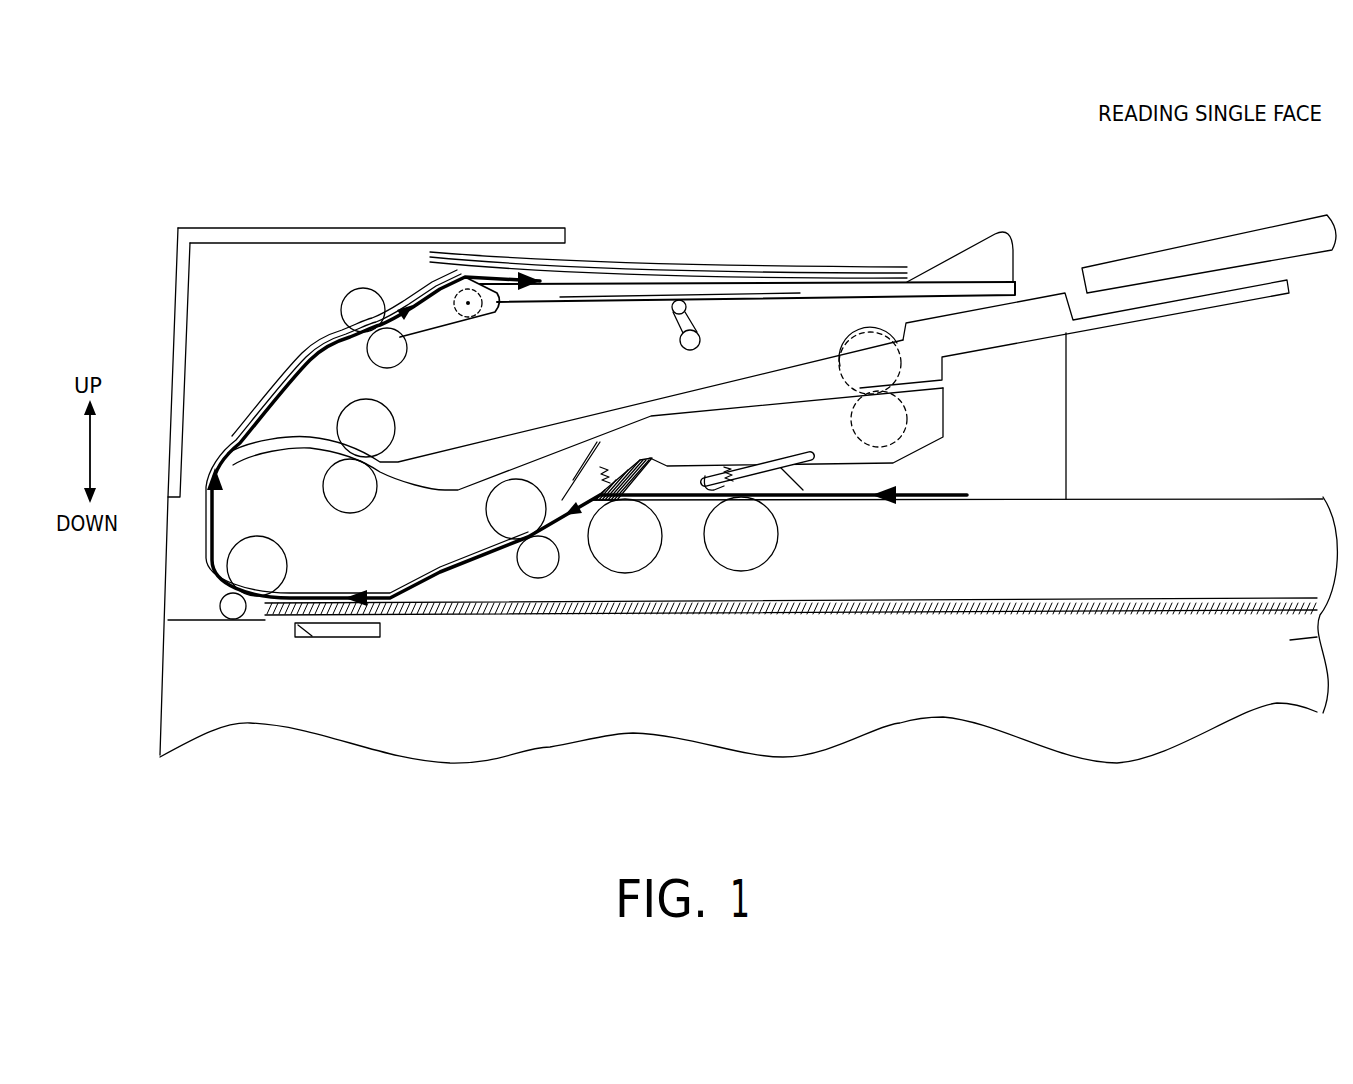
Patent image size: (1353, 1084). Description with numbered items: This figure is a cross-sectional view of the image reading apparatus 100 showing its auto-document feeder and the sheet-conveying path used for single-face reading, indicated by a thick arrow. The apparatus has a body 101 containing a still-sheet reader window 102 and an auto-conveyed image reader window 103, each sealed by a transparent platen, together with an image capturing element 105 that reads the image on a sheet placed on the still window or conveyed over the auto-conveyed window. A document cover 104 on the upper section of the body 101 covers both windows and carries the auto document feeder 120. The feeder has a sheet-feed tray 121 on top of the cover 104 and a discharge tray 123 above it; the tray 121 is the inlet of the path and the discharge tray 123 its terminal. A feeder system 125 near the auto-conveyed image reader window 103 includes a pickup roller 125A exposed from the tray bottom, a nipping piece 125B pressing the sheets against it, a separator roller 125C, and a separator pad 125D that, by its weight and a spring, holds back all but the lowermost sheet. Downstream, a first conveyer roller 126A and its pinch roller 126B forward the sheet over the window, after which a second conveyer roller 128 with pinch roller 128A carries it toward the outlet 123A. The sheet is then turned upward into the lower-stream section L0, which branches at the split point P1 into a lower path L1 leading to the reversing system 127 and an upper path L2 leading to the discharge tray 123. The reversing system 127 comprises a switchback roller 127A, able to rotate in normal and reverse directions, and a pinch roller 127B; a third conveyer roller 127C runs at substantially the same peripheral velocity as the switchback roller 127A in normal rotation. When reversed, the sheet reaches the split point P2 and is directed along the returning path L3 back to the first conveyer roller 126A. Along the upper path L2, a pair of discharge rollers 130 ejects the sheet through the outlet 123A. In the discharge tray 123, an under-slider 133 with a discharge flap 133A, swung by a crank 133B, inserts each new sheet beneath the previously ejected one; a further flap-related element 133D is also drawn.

The image reading apparatus 100 is at (1160, 620).
The body 101 is at (188, 708).
The still-sheet reader window 102 is at (400, 641).
The auto-conveyed image reader window 103 is at (262, 641).
The document cover 104 is at (1107, 577).
The image capturing element 105 is at (293, 640).
The auto document feeder 120 is at (205, 383).
The sheet-feed tray 121 is at (1193, 497).
The discharge tray 123 is at (1203, 243).
The outlet 123A is at (403, 458).
The feeder system 125 is at (700, 575).
The pickup roller 125A is at (777, 547).
The nipping piece 125B is at (800, 480).
The separator roller 125C is at (650, 573).
The separator pad 125D is at (580, 557).
The first conveyer roller 126A is at (482, 552).
The pinch roller 126B is at (550, 575).
The reversing system 127 is at (906, 384).
The switchback roller 127A is at (897, 340).
The pinch roller 127B is at (897, 403).
The third conveyer roller 127C is at (320, 465).
The second conveyer roller 128 is at (227, 562).
The pinch roller 128A is at (220, 607).
The pair of discharge rollers 130 is at (362, 288).
The under-slider 133 is at (749, 262).
The discharge flap 133A is at (645, 288).
The crank 133B is at (700, 322).
The flap guide 133D is at (487, 290).
The lower-stream section L0 is at (208, 512).
The lower path L1 is at (273, 435).
The upper path L2 is at (285, 447).
The returning path L3 is at (575, 480).
The split point P1 is at (230, 450).
The split point P2 is at (590, 442).